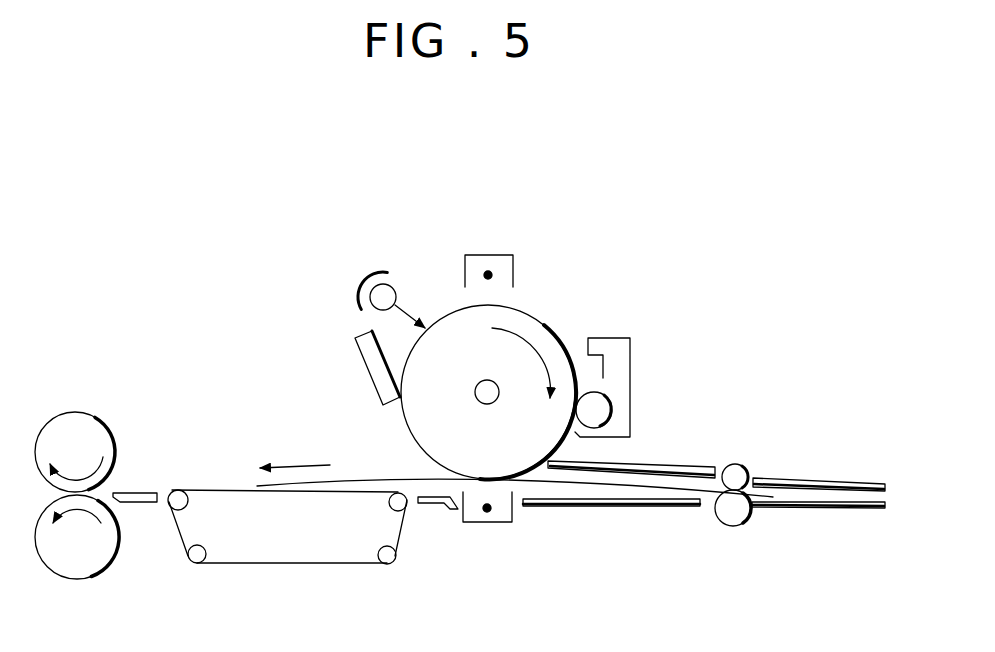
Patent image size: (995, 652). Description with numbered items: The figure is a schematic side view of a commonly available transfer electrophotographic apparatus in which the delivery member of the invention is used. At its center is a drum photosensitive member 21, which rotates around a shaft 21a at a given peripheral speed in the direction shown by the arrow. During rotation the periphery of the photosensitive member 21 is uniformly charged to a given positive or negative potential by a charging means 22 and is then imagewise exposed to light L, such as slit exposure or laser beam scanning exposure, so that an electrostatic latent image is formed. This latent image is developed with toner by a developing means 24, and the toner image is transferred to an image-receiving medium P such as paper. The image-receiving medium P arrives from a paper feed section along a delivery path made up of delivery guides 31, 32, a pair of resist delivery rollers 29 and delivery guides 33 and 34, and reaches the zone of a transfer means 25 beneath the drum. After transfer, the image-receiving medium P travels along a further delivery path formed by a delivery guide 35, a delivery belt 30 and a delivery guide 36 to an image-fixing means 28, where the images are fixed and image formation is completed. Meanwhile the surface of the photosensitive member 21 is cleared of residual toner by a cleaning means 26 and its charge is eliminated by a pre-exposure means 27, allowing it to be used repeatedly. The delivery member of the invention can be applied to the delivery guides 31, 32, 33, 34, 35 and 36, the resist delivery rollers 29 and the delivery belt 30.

The drum photosensitive member 21 is at (407, 353).
The shaft 21a is at (477, 385).
The charging means 22 is at (503, 255).
The light L is at (537, 315).
The developing means 24 is at (630, 357).
The transfer means 25 is at (490, 524).
The cleaning means 26 is at (371, 378).
The pre-exposure means 27 is at (370, 272).
The image-fixing means 28 is at (90, 412).
The resist delivery rollers 29 is at (745, 468).
The delivery belt 30 is at (232, 490).
The delivery guide 31 is at (837, 480).
The delivery guide 32 is at (840, 510).
The delivery guide 33 is at (655, 465).
The delivery guide 34 is at (622, 507).
The delivery guide 35 is at (437, 506).
The delivery guide 36 is at (143, 493).
The image-receiving medium P is at (722, 480).